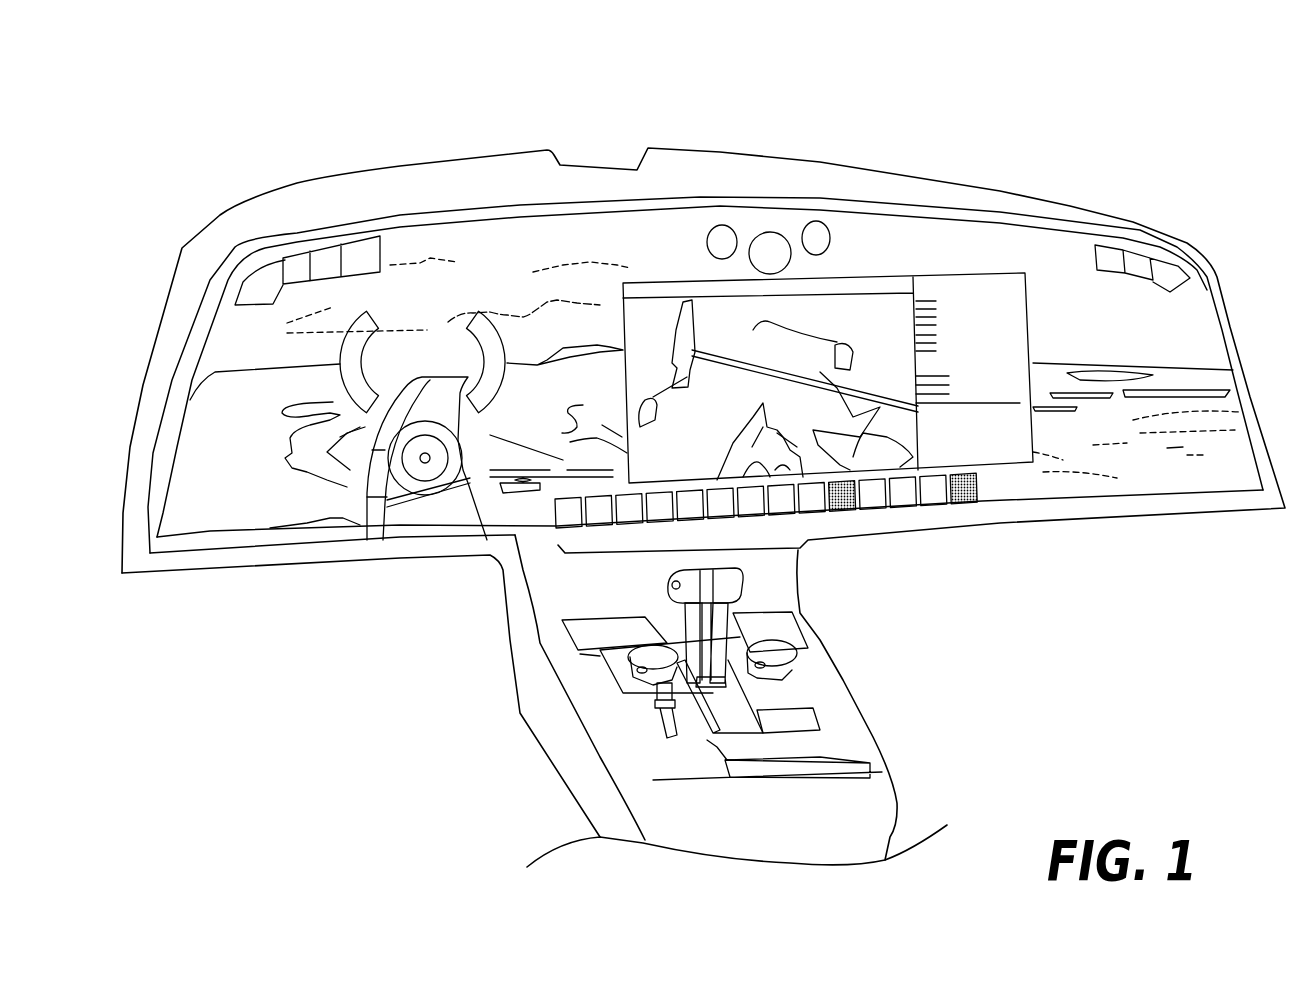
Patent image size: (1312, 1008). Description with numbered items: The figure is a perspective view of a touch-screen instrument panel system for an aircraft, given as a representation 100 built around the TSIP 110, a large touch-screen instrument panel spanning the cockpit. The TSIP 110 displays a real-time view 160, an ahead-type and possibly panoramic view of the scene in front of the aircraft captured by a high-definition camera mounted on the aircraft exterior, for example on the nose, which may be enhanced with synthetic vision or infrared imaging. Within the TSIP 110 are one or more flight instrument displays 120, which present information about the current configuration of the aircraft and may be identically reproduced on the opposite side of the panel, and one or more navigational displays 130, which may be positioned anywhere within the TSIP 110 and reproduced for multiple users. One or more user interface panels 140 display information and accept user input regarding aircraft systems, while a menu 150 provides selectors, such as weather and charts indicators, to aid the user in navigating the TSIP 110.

The representation 100 is at (1082, 91).
The TSIP 110 is at (1222, 335).
The flight instrument display 120 is at (768, 232).
The navigational display 130 is at (333, 367).
The user interface panel 140 is at (1010, 465).
The menu 150 is at (858, 541).
The real-time view 160 is at (1183, 448).